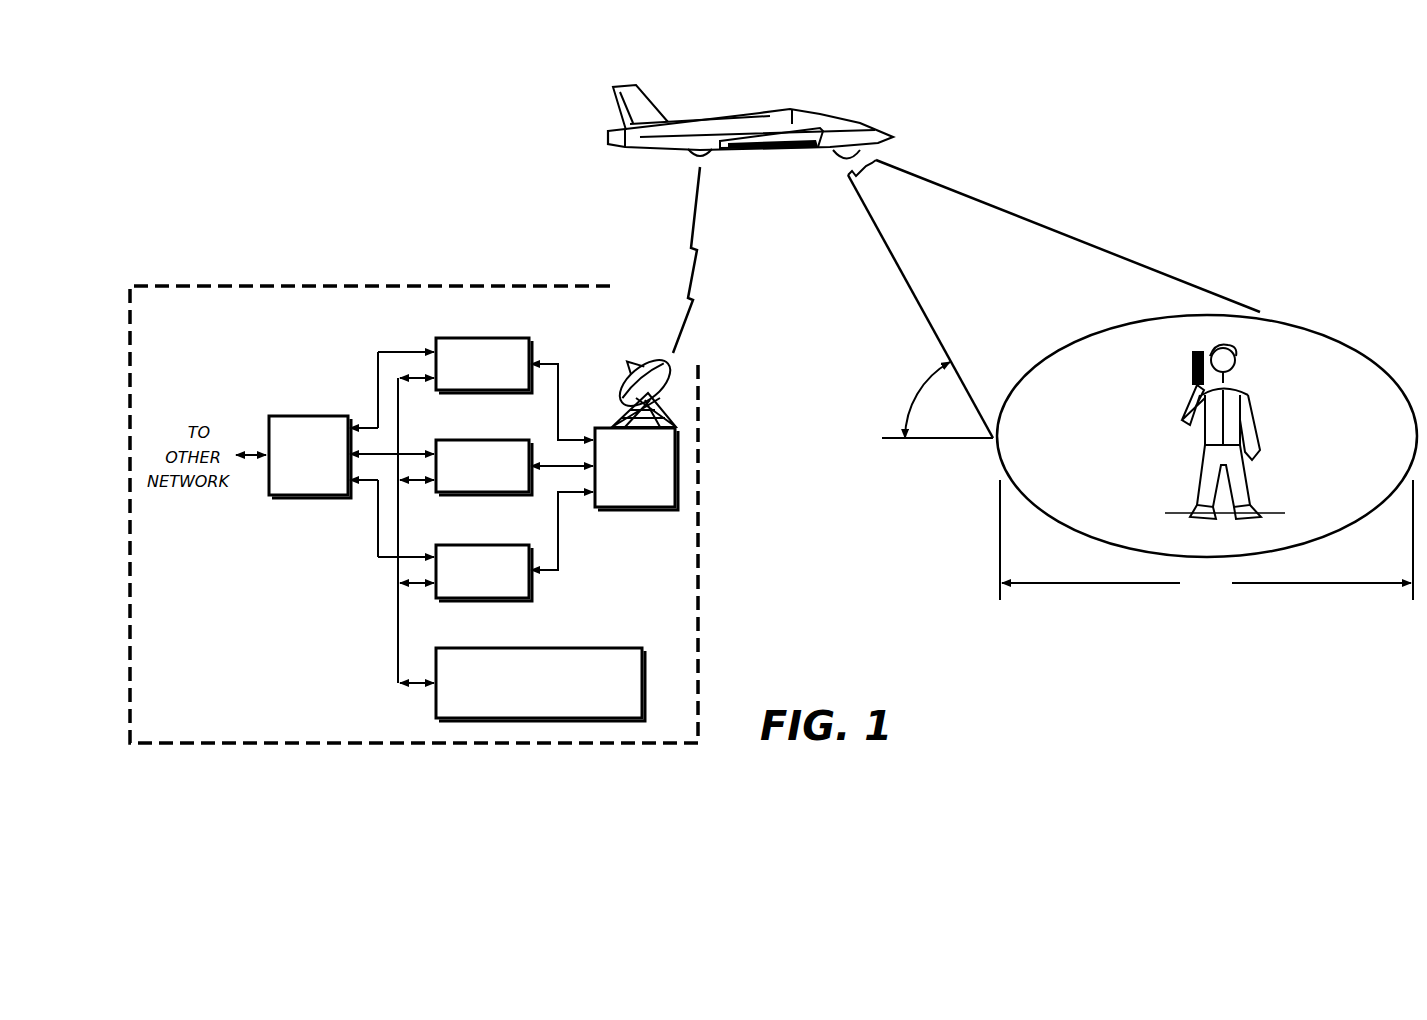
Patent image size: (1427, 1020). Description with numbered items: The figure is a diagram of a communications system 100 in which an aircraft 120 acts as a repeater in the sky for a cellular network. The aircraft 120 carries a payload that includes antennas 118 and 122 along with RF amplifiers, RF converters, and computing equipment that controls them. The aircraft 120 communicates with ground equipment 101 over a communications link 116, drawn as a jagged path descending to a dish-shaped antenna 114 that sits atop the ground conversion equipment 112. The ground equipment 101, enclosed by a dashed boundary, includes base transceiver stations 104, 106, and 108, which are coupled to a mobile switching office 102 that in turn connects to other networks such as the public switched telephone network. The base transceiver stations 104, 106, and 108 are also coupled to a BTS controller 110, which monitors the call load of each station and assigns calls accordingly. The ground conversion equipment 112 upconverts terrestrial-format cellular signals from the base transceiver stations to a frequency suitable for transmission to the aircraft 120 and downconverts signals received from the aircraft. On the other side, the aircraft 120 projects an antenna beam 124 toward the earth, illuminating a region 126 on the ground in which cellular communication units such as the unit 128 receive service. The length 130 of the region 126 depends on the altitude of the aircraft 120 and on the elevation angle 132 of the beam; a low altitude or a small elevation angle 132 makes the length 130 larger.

The communications system 100 is at (1095, 713).
The ground equipment 101 is at (255, 684).
The mobile switching office 102 is at (313, 414).
The base transceiver station 104 is at (486, 336).
The base transceiver station 106 is at (486, 438).
The base transceiver station 108 is at (486, 543).
The BTS controller 110 is at (580, 647).
The ground conversion equipment 112 is at (637, 510).
The ground station antenna 114 is at (635, 352).
The communications link 116 is at (698, 222).
The antenna 118 is at (710, 157).
The aircraft 120 is at (806, 110).
The antenna 122 is at (866, 154).
The antenna beam 124 is at (974, 266).
The region 126 is at (1347, 343).
The cellular communication unit 128 is at (1203, 481).
The length 130 is at (1206, 540).
The elevation angle 132 is at (912, 395).